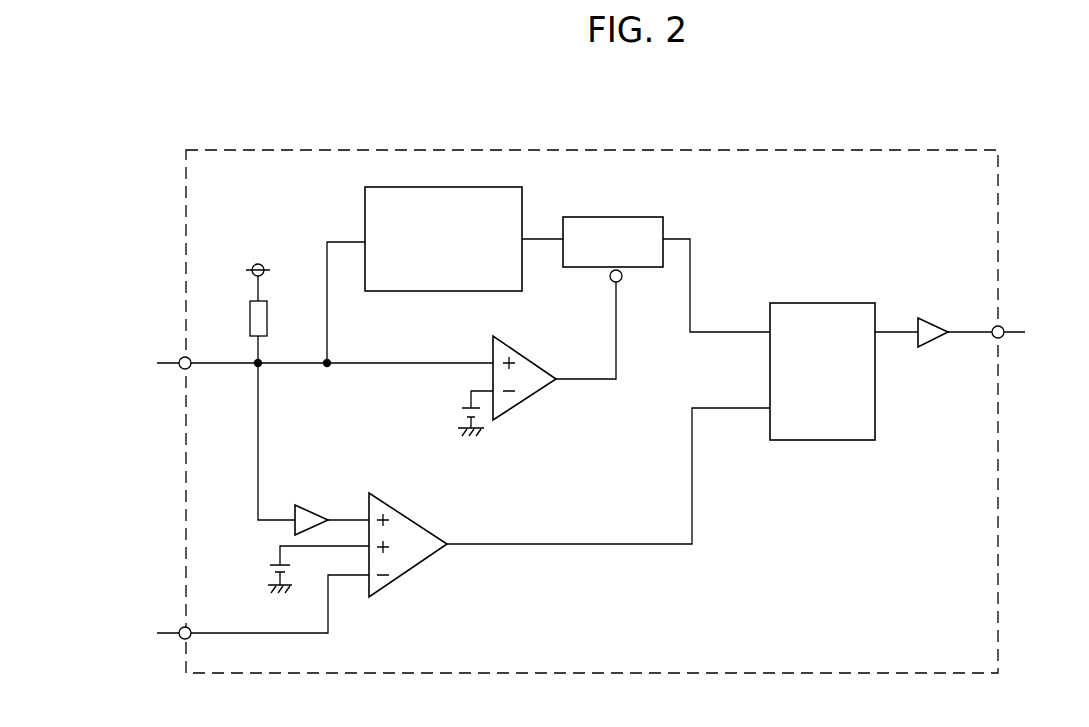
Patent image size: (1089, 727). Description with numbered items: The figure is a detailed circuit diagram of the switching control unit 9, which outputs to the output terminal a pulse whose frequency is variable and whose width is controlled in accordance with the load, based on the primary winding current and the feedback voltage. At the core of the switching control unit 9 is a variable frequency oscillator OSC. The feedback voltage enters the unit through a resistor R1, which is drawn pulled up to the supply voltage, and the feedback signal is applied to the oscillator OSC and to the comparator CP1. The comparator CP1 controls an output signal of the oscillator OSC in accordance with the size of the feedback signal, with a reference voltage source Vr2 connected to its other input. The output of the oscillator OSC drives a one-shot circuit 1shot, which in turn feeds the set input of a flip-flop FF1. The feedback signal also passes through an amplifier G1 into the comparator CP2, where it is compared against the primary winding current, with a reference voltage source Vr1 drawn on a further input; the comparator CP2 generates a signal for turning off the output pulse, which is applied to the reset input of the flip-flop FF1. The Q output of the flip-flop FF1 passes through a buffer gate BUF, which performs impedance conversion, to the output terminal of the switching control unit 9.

The switching control unit 9 is at (583, 150).
The variable frequency oscillator OSC is at (443, 239).
The one-shot circuit 1shot is at (613, 249).
The comparator CP1 is at (532, 376).
The comparator CP2 is at (412, 545).
The resistor R1 is at (238, 318).
The amplifier G1 is at (313, 505).
The flip-flop FF1 is at (822, 359).
The buffer gate BUF is at (941, 319).
The first reference voltage source Vr1 is at (298, 569).
The second reference voltage source Vr2 is at (456, 413).